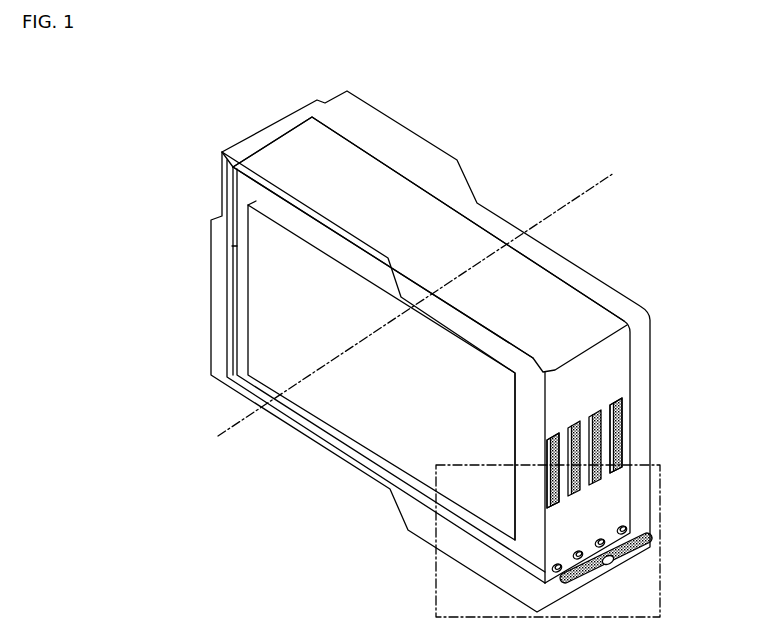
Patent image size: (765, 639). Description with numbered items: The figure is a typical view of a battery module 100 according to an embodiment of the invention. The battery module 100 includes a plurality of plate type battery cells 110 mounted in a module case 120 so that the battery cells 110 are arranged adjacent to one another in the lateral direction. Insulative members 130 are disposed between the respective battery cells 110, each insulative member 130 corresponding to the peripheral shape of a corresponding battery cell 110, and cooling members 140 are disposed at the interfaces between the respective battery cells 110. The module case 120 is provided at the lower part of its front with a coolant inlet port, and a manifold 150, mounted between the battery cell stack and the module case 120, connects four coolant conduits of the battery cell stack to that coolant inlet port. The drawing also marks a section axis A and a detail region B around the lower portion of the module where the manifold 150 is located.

The battery module 100 is at (72, 81).
The plate type battery cell 110 is at (368, 431).
The module case 120 is at (393, 147).
The insulative member 130 is at (634, 444).
The cooling member 140 is at (629, 399).
The manifold 150 is at (647, 538).
The section axis A is at (425, 302).
The detail region B is at (661, 589).